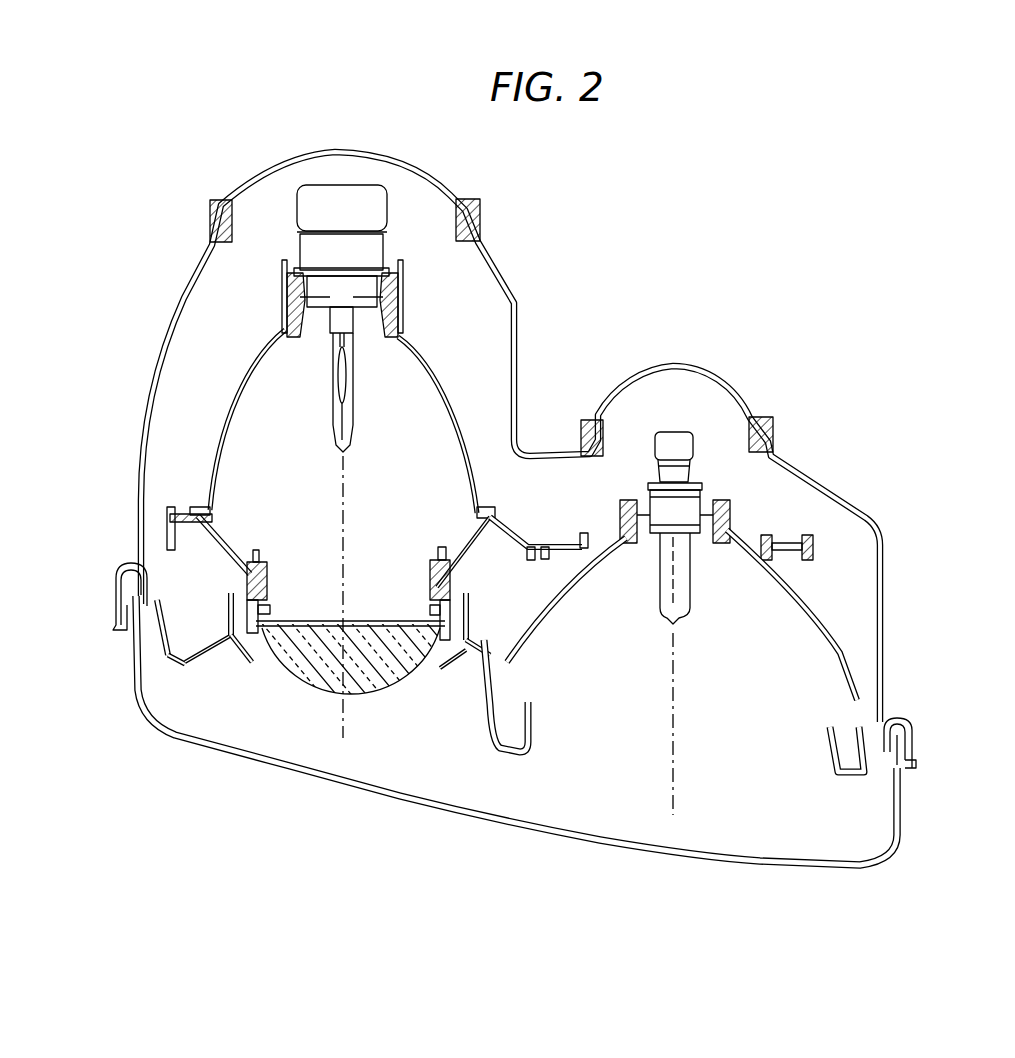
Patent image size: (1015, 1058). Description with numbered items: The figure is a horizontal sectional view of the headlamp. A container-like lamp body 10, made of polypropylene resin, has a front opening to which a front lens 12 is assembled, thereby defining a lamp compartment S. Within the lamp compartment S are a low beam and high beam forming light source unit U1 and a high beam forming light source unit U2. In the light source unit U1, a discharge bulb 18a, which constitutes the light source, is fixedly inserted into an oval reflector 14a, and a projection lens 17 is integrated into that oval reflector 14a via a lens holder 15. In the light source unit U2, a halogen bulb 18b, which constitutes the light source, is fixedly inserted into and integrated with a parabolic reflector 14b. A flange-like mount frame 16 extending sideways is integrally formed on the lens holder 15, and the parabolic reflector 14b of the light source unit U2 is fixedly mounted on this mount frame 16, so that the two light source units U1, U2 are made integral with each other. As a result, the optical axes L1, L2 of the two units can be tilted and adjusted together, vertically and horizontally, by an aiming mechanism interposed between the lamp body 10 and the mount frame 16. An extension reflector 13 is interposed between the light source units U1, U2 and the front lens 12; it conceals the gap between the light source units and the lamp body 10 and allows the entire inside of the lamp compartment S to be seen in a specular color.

The lamp body 10 is at (510, 292).
The front lens 12 is at (229, 760).
The extension reflector 13 is at (157, 640).
The oval reflector 14a is at (222, 435).
The parabolic reflector 14b is at (847, 650).
The lens holder 15 is at (225, 520).
The mount frame 16 is at (560, 547).
The projection lens 17 is at (307, 627).
The discharge bulb 18a is at (312, 400).
The halogen bulb 18b is at (693, 577).
The lamp compartment S is at (427, 774).
The optical axis L1 is at (340, 718).
The optical axis L2 is at (673, 753).
The low beam and high beam forming light source unit U1 is at (78, 328).
The high beam forming light source unit U2 is at (955, 565).